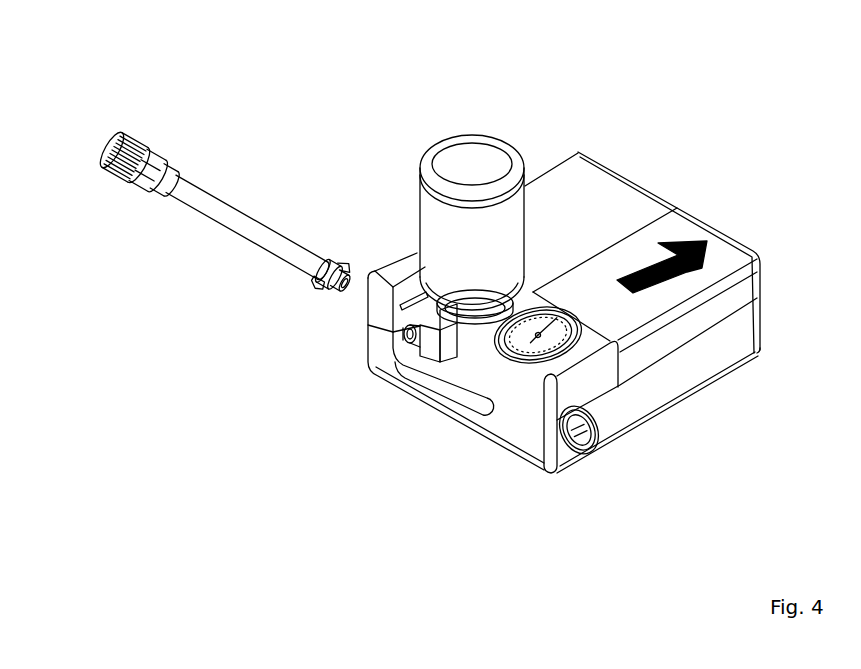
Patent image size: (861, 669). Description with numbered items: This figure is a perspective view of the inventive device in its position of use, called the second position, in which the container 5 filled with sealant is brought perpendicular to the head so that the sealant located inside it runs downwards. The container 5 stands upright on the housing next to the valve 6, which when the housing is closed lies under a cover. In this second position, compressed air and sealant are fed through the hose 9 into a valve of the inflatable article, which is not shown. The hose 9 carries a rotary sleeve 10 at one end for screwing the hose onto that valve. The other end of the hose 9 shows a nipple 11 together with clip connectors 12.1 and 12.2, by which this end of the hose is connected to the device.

The container 5 is at (500, 142).
The valve 6 is at (448, 337).
The hose 9 is at (240, 237).
The rotary sleeve 10 is at (112, 142).
The nipple 11 is at (345, 296).
The clip connector 12.1 is at (322, 290).
The clip connector 12.2 is at (352, 272).